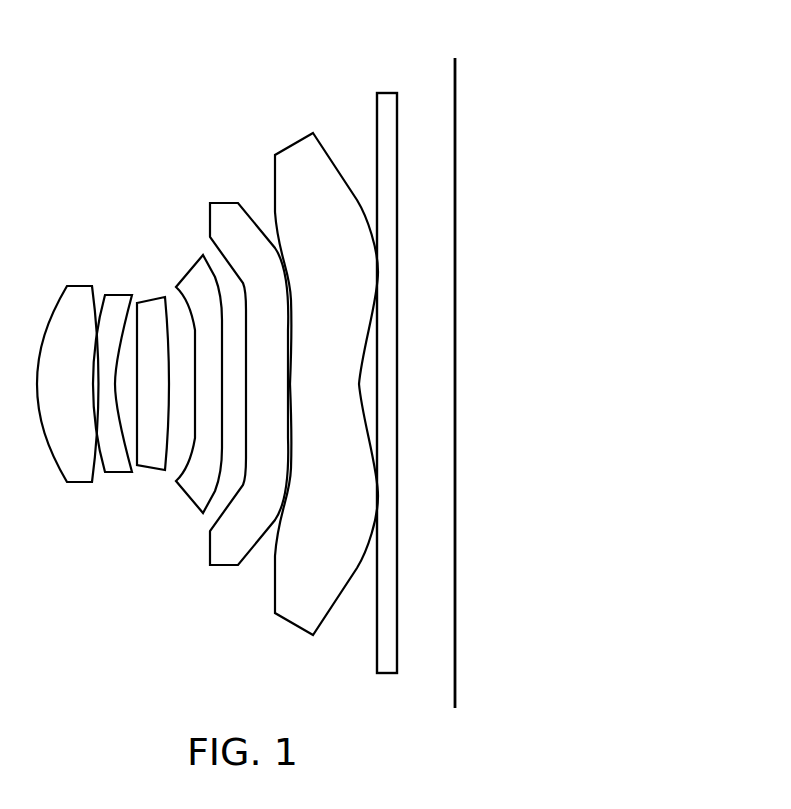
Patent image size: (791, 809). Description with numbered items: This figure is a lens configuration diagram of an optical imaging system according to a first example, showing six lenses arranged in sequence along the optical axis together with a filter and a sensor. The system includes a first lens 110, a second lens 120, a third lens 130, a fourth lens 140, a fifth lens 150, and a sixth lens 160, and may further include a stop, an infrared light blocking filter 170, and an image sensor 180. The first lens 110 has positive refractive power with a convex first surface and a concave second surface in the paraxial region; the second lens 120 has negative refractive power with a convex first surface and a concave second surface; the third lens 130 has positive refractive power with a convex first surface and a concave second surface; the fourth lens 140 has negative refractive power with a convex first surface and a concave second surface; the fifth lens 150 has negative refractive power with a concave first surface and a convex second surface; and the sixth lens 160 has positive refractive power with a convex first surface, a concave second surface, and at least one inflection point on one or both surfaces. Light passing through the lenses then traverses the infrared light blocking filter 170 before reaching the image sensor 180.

The first lens 110 is at (77, 286).
The second lens 120 is at (120, 296).
The third lens 130 is at (158, 301).
The fourth lens 140 is at (190, 267).
The fifth lens 150 is at (220, 203).
The sixth lens 160 is at (295, 141).
The infrared light blocking filter 170 is at (387, 93).
The image sensor 180 is at (453, 75).